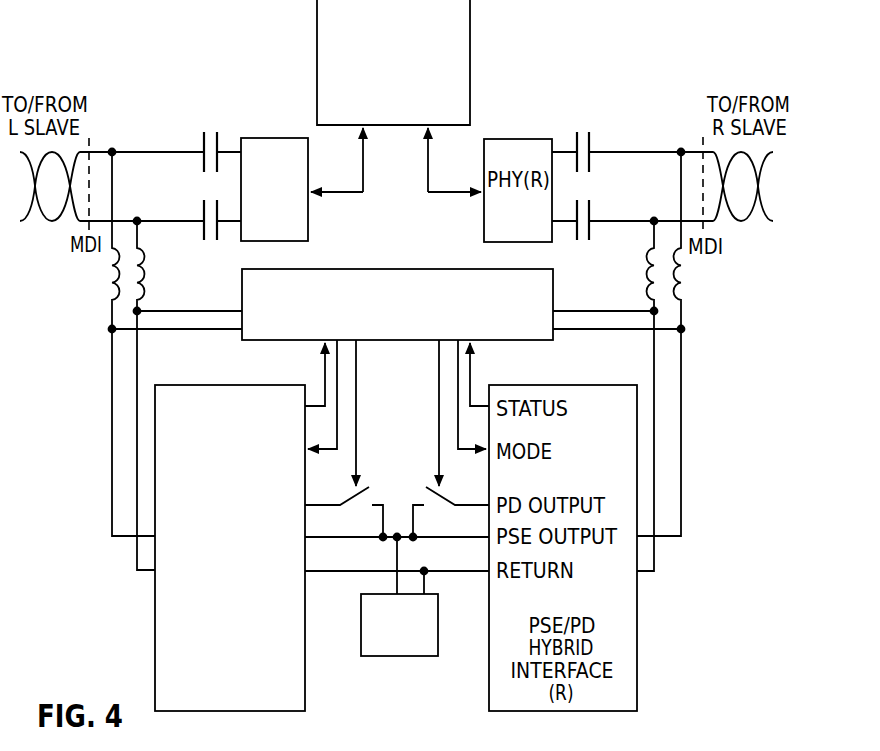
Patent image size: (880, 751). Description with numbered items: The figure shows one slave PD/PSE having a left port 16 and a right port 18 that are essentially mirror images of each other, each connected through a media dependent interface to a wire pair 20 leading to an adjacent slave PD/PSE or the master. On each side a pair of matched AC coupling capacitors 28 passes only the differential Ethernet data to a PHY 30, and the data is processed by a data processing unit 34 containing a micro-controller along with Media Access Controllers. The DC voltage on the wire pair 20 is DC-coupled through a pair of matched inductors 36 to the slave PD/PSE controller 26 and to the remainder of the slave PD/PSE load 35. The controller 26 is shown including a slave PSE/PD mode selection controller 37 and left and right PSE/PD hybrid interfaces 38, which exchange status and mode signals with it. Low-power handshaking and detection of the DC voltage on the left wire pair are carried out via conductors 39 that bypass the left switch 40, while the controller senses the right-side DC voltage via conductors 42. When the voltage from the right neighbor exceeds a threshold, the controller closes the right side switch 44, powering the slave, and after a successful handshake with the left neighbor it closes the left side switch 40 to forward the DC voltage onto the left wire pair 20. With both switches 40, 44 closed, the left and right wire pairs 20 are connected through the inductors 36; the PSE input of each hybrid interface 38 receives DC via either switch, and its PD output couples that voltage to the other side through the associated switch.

The left port 16 is at (152, 128).
The right port 18 is at (642, 128).
The wire pair 20 is at (52, 222).
The slave PD/PSE controller 26 is at (395, 241).
The AC coupling capacitors 28 is at (204, 131).
The PHY 30 is at (280, 138).
The data processing unit 34 is at (470, 55).
The slave PD/PSE load 35 is at (397, 656).
The matched inductors 36 is at (90, 276).
The slave PSE/PD mode selection controller 37 is at (357, 269).
The PSE/PD hybrid interface 38 is at (155, 663).
The conductors 39 is at (214, 291).
The left side switch 40 is at (376, 491).
The conductors 42 is at (577, 290).
The right side switch 44 is at (416, 491).